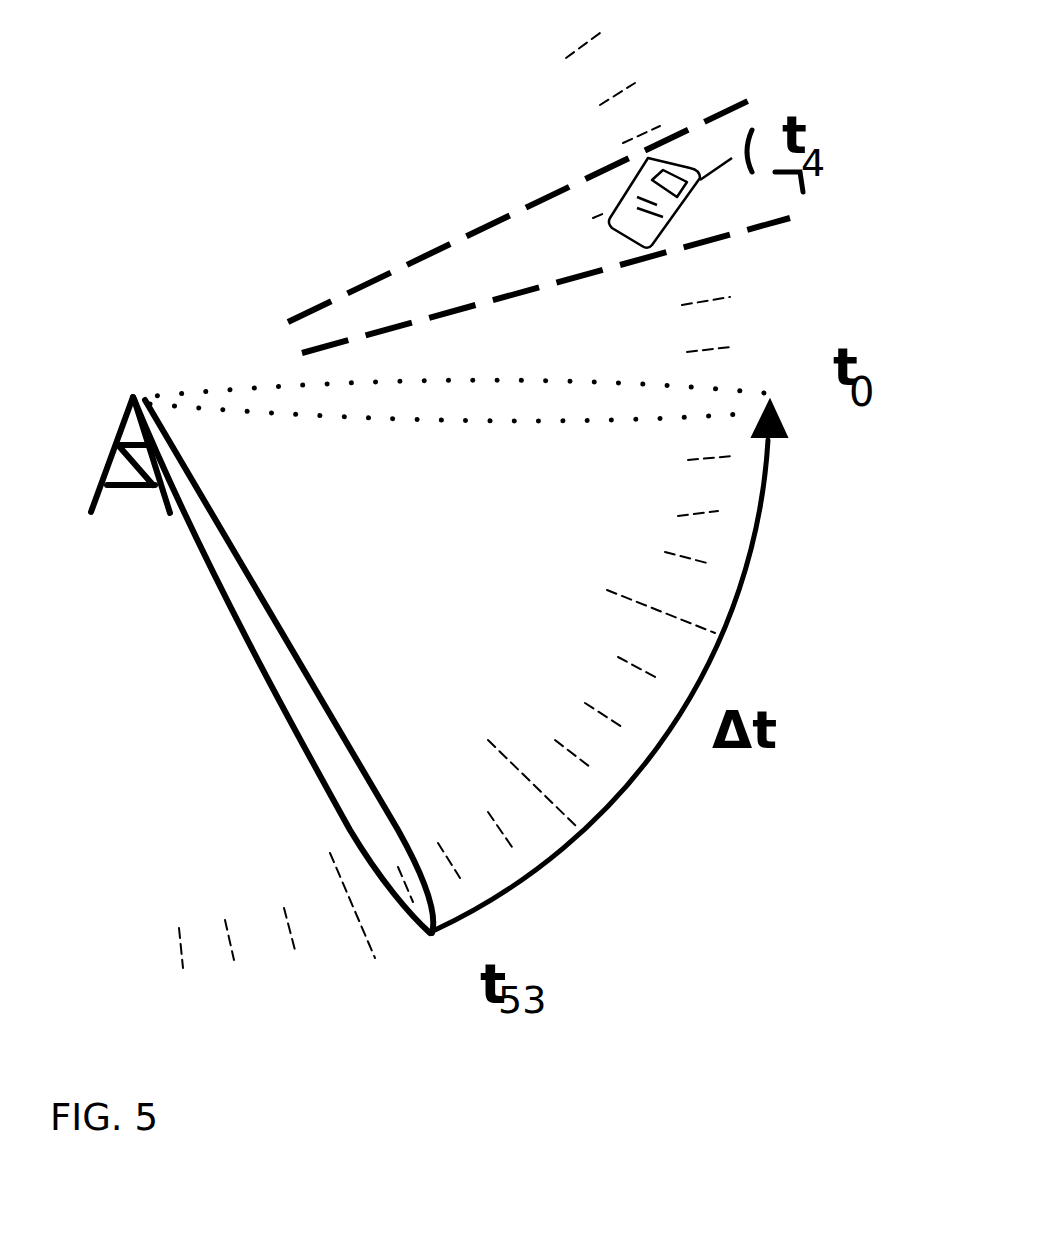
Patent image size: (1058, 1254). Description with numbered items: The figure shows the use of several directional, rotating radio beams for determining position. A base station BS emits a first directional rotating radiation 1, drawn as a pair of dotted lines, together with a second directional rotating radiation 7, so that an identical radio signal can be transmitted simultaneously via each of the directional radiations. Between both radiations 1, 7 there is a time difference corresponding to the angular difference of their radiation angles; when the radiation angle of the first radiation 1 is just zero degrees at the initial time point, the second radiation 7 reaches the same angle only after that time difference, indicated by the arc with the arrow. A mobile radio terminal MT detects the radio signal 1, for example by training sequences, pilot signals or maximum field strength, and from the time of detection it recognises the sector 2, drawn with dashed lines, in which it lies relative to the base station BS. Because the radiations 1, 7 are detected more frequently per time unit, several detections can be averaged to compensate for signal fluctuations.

The radio signal 1 is at (513, 403).
The sector 2 is at (513, 237).
The second directional rotating radiation 7 is at (310, 720).
The base station BS is at (120, 508).
The mobile radio terminal MT is at (672, 203).